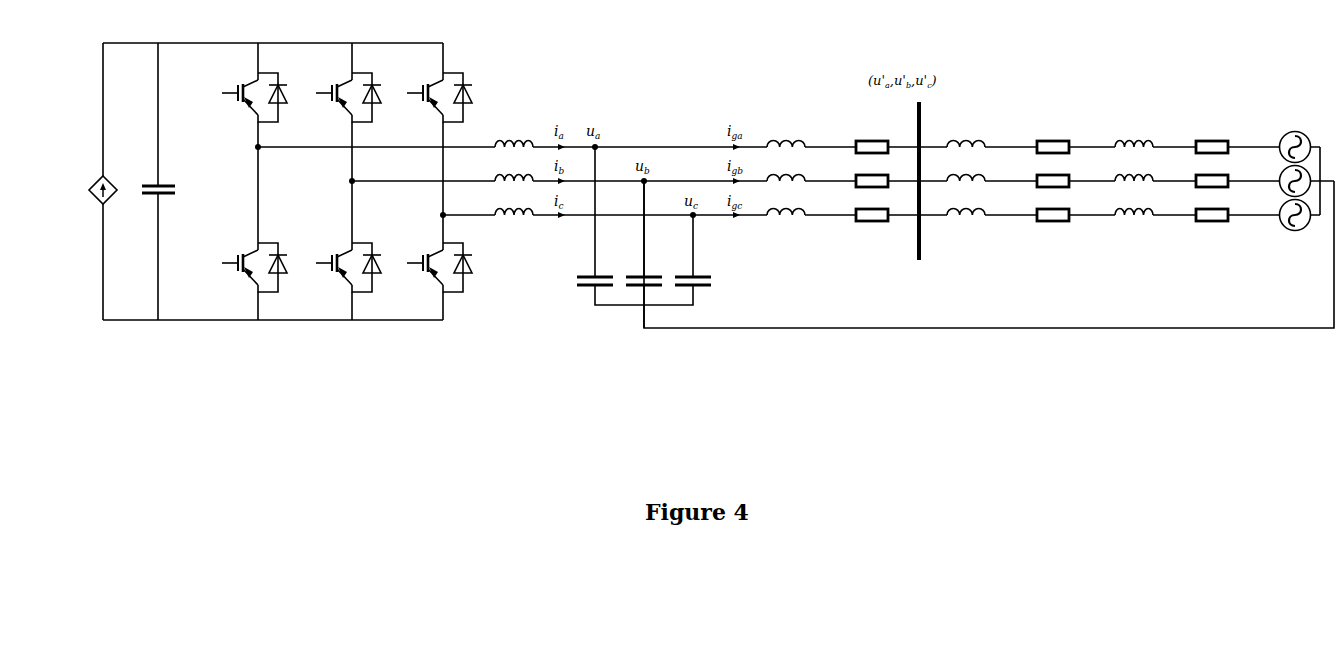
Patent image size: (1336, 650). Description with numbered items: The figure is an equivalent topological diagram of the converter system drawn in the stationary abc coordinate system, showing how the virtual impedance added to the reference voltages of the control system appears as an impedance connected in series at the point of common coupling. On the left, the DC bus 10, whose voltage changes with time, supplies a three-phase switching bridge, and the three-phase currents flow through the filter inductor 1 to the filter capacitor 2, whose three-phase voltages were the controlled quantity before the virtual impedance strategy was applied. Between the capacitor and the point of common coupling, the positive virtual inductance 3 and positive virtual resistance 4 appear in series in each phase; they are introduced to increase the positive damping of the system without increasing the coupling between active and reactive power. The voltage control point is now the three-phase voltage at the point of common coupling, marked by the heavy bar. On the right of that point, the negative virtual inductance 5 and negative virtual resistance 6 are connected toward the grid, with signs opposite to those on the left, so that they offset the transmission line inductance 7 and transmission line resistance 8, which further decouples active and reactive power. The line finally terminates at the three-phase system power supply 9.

The filter inductor 1 is at (514, 169).
The filter capacitor 2 is at (658, 237).
The positive virtual inductance 3 is at (786, 164).
The positive virtual resistance 4 is at (871, 167).
The negative virtual inductance 5 is at (966, 164).
The negative virtual resistance 6 is at (1052, 167).
The transmission line inductance 7 is at (1134, 164).
The transmission line resistance 8 is at (1212, 167).
The system power supply 9 is at (1295, 170).
The DC bus 10 is at (184, 181).